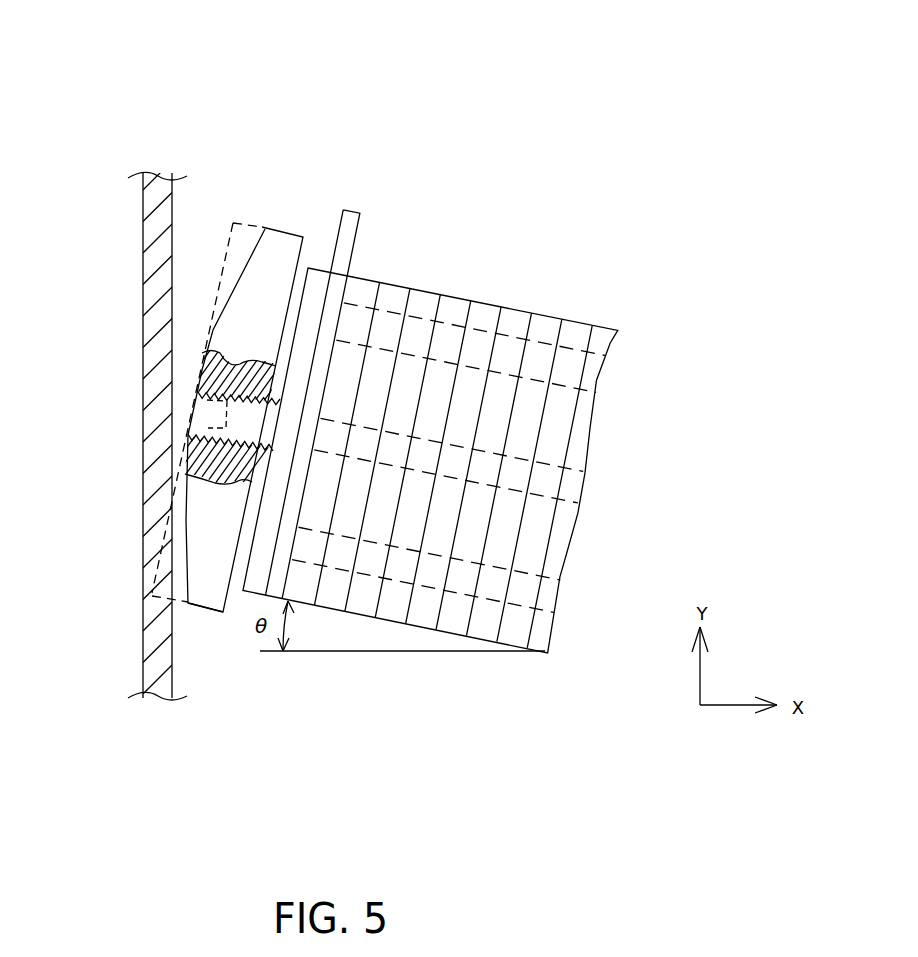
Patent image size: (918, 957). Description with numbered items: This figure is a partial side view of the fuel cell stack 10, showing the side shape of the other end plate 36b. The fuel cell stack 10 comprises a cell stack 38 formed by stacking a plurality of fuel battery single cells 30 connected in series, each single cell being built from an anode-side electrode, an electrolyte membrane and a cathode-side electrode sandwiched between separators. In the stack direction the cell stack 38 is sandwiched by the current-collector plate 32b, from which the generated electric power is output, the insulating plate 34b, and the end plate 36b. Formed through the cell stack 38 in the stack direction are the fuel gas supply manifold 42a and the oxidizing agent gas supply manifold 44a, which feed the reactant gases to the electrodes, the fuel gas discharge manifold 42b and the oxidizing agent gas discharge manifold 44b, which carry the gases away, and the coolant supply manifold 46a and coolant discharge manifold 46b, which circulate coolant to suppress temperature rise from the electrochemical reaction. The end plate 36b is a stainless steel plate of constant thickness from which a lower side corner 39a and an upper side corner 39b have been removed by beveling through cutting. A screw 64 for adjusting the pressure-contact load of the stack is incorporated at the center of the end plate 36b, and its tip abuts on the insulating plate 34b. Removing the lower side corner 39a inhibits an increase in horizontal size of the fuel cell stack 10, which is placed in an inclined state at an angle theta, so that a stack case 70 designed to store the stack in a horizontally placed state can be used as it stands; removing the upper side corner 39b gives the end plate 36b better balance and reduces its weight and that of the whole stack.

The fuel cell stack 10 is at (588, 153).
The fuel battery single cell 30 is at (513, 318).
The current-collector plate 32b is at (358, 231).
The insulating plate 34b is at (248, 598).
The end plate 36b is at (291, 230).
The cell stack 38 is at (581, 318).
The lower side corner 39a is at (150, 600).
The upper side corner 39b is at (229, 236).
The fuel gas supply manifold 42a is at (567, 348).
The oxidizing agent gas supply manifold 44a is at (572, 359).
The coolant supply manifold 46a is at (553, 458).
The coolant discharge manifold 46b is at (559, 469).
The fuel gas discharge manifold 42b is at (520, 567).
The oxidizing agent gas discharge manifold 44b is at (539, 571).
The screw 64 is at (240, 428).
The stack case 70 is at (143, 325).